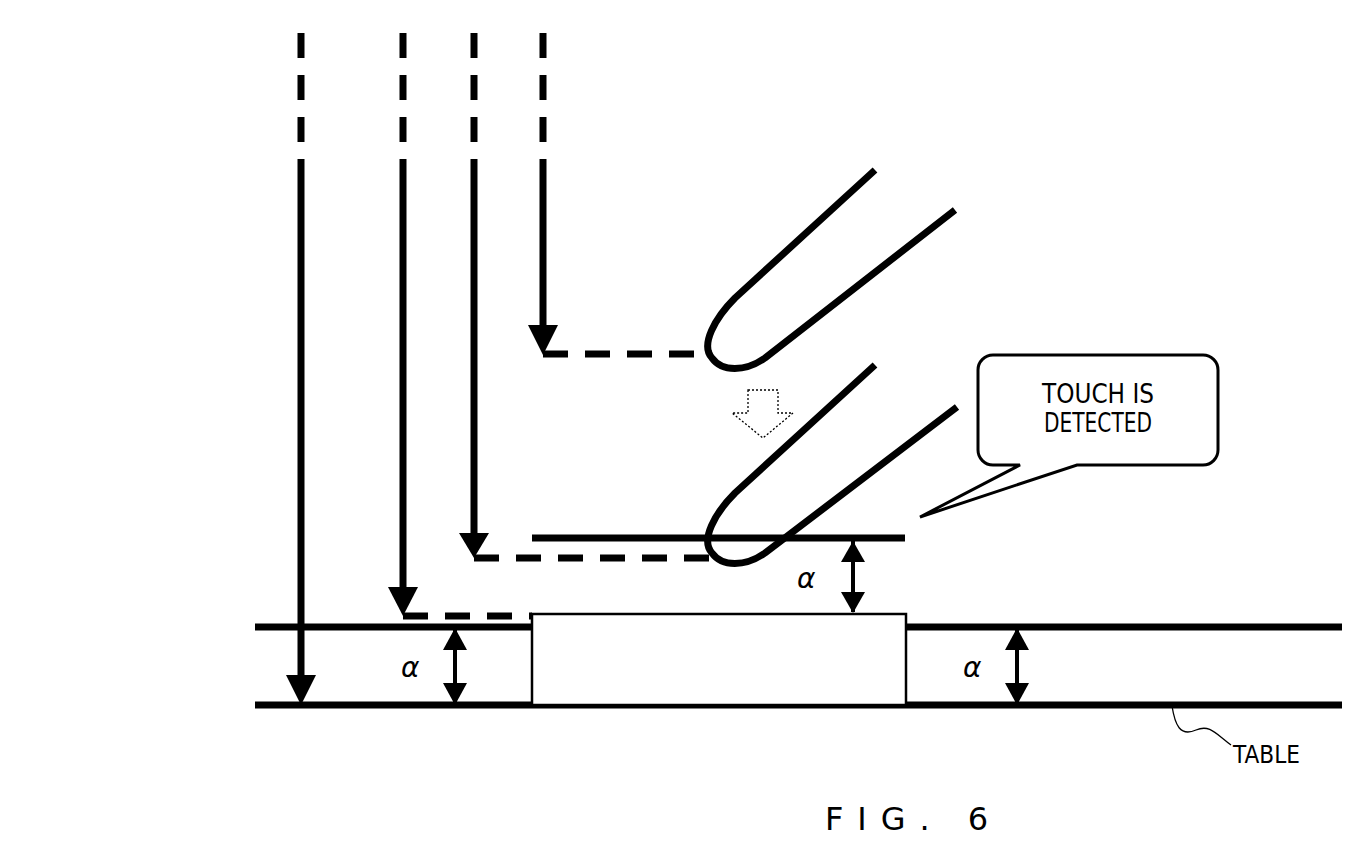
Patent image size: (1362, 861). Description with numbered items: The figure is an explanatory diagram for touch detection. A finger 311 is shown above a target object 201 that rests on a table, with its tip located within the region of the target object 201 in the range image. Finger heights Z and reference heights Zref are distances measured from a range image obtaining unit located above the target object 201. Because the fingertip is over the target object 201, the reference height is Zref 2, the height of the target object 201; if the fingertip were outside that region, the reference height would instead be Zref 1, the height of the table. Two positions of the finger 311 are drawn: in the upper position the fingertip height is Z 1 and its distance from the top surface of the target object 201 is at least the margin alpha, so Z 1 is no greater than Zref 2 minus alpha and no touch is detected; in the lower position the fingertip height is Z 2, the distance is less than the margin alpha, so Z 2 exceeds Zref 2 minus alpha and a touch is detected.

The finger 311 is at (915, 404).
The target object 201 is at (850, 683).
The first reference height Zref1 / Z1 1 is at (469, 369).
The second reference height Zref2 / Z2 2 is at (517, 324).